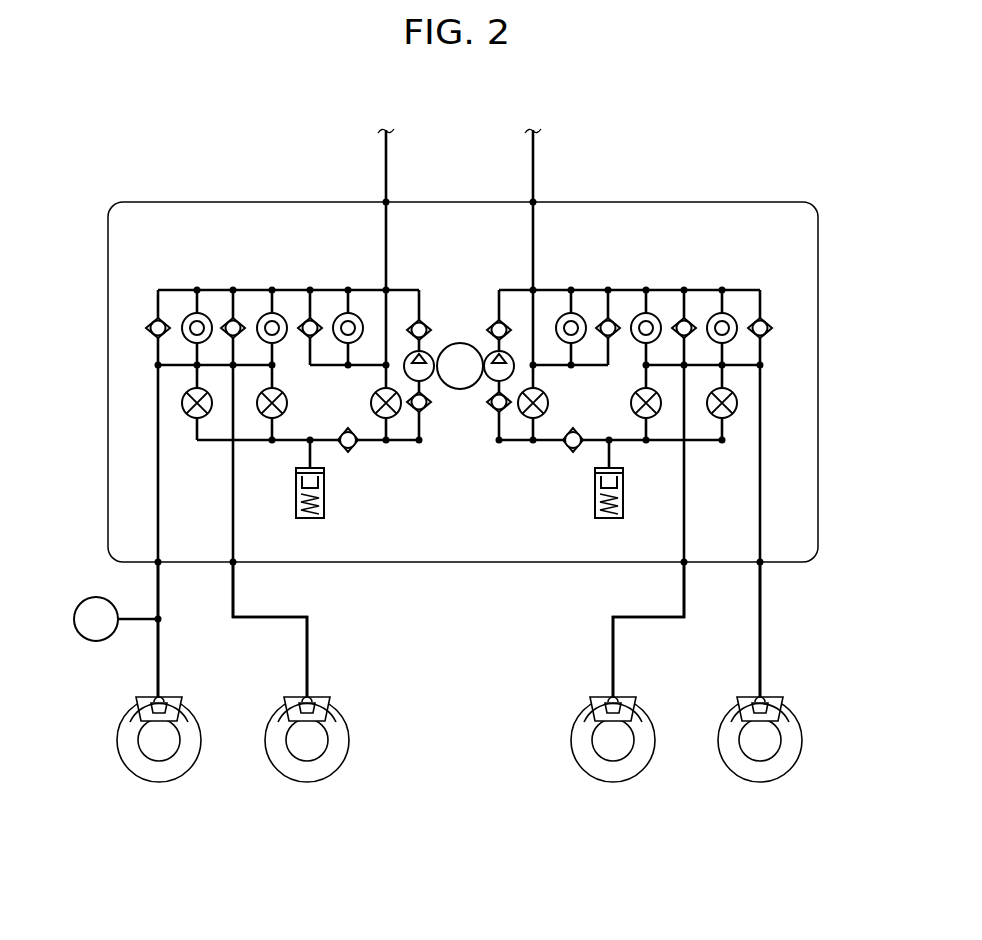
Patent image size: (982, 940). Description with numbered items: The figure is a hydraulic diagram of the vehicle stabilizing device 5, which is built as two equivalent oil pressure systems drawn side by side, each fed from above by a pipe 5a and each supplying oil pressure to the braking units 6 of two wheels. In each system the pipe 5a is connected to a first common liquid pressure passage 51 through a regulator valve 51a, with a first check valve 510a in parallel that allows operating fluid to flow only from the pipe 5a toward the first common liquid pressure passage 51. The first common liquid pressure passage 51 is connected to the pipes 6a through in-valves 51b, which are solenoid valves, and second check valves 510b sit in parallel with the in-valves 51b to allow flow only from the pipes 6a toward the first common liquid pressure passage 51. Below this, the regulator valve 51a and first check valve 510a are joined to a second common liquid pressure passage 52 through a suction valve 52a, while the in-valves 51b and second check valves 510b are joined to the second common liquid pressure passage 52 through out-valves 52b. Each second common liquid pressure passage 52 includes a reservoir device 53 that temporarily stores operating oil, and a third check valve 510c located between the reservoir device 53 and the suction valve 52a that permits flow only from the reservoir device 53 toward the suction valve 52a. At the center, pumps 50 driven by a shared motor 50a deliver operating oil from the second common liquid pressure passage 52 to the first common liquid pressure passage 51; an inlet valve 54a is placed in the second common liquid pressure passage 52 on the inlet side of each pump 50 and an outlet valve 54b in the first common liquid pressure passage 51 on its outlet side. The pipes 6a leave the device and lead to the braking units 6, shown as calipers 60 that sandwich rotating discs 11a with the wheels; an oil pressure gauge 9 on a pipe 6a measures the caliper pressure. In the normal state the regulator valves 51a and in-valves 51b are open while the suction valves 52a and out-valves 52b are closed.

The vehicle stabilizing device 5 is at (655, 202).
The pipe 5a is at (388, 172).
The braking unit 6 is at (182, 697).
The pipe 6a is at (160, 625).
The oil pressure gauge 9 is at (96, 641).
The disc 11a is at (160, 783).
The caliper 60 is at (129, 723).
The pump 50 is at (488, 380).
The motor 50a is at (459, 343).
The first common liquid pressure passage 51 is at (245, 290).
The regulator valve 51a is at (348, 313).
The in-valve 51b is at (197, 313).
The second common liquid pressure passage 52 is at (250, 440).
The suction valve 52a is at (369, 403).
The out-valve 52b is at (290, 403).
The reservoir device 53 is at (325, 500).
The inlet valve 54a is at (490, 412).
The outlet valve 54b is at (494, 318).
The first check valve 510a is at (310, 316).
The second check valve 510b is at (158, 316).
The third check valve 510c is at (349, 450).